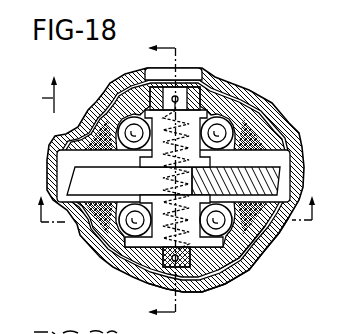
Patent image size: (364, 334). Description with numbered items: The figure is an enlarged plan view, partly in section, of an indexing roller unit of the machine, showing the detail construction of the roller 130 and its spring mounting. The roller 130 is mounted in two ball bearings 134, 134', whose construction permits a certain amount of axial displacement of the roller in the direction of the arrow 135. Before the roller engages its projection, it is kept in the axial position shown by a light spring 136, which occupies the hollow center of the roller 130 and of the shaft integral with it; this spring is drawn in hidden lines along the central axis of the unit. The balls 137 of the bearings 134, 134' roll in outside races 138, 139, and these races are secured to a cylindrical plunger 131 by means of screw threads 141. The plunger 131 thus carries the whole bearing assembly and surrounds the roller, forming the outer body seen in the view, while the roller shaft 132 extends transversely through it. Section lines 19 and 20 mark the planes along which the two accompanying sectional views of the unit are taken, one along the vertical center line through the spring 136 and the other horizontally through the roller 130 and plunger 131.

The roller 130 is at (85, 182).
The cylindrical plunger 131 is at (265, 118).
The bar 132 is at (292, 178).
The ball bearing 134 is at (248, 257).
The ball bearing 134' is at (231, 101).
The arrow 135 is at (36, 94).
The light spring 136 is at (213, 285).
The balls 137 is at (133, 128).
The outside race 138 is at (243, 107).
The outside race 139 is at (264, 253).
The screw threads 141 is at (288, 131).
The section line 19- 19 is at (175, 183).
The section line 20- 20 is at (175, 225).